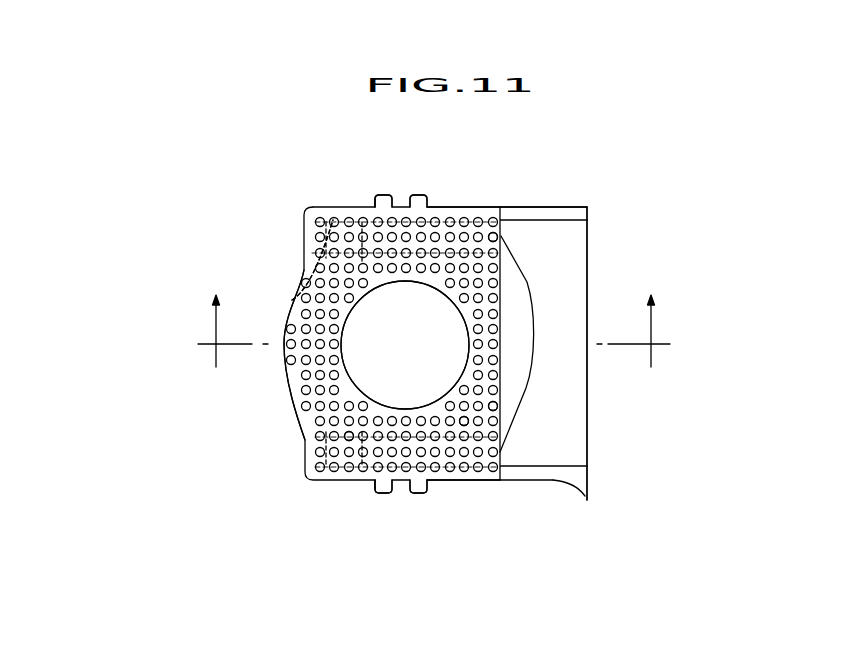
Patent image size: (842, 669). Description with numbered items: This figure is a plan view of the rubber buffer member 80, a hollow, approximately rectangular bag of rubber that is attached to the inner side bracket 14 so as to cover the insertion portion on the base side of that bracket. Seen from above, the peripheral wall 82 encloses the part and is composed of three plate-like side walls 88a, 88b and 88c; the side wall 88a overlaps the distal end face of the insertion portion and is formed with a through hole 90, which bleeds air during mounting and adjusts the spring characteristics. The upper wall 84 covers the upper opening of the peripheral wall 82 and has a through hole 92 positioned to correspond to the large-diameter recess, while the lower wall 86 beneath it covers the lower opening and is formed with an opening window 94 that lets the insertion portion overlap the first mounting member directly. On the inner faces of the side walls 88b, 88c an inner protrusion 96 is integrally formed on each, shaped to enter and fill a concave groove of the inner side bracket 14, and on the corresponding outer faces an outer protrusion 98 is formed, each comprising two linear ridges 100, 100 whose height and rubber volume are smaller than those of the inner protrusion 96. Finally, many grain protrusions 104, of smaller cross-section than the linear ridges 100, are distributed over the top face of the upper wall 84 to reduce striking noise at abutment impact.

The rubber buffer member 80 is at (626, 160).
The peripheral wall 82 is at (300, 233).
The upper wall 84 is at (462, 265).
The lower wall 86 is at (562, 425).
The side wall 88a is at (293, 375).
The side wall 88b is at (492, 481).
The side wall 88c is at (505, 216).
The through hole 90 is at (292, 300).
The through hole 92 is at (366, 393).
The opening window 94 is at (515, 290).
The inner protrusion 96 is at (398, 243).
The outer protrusion 98 is at (368, 199).
The linear ridge 100 is at (418, 196).
The grain protrusion 104 is at (497, 242).
The inner side bracket 14 is at (434, 355).